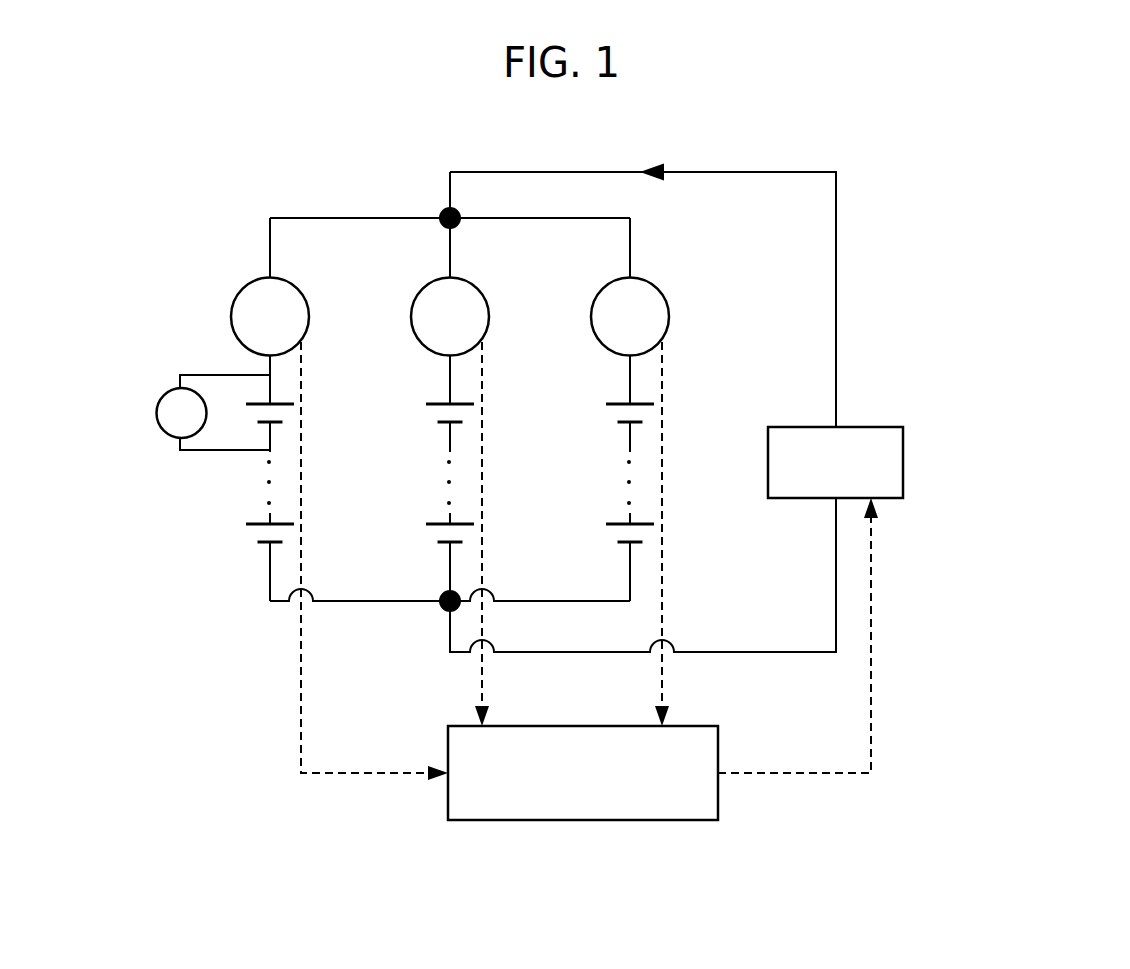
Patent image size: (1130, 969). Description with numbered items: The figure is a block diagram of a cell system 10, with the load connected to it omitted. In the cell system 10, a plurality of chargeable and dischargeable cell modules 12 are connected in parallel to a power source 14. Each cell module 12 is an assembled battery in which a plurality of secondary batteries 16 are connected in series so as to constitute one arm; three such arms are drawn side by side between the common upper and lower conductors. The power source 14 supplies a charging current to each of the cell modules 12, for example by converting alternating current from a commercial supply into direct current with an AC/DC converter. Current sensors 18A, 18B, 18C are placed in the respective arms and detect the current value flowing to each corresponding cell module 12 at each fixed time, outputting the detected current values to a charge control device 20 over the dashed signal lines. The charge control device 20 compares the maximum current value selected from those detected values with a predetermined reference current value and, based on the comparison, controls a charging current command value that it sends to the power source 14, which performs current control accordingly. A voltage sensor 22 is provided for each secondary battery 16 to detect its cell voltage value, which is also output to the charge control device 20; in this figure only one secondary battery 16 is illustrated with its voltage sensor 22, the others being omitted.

The cell system 10 is at (360, 148).
The cell module 12 is at (216, 501).
The power source 14 is at (903, 461).
The secondary battery 16 is at (237, 541).
The current sensor 18A is at (291, 284).
The current sensor 18B is at (473, 284).
The current sensor 18C is at (656, 284).
The charge control device 20 is at (583, 820).
The voltage sensor 22 is at (156, 413).